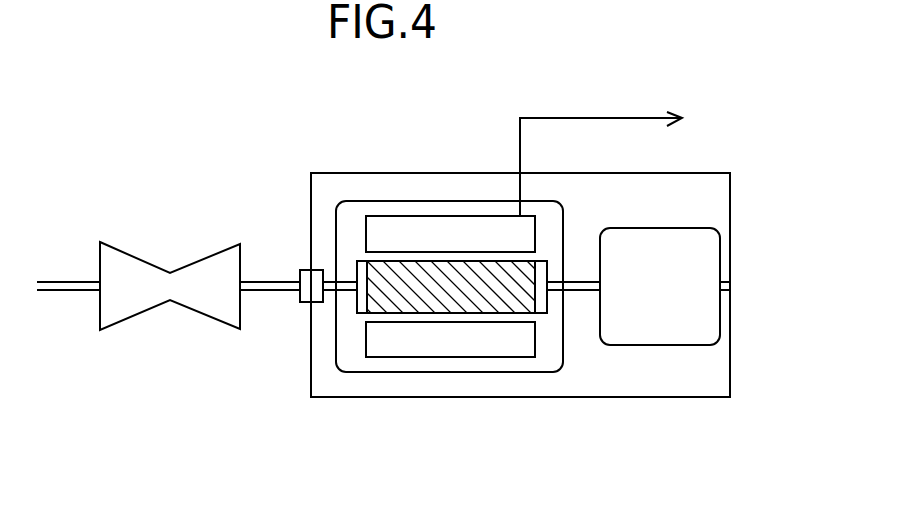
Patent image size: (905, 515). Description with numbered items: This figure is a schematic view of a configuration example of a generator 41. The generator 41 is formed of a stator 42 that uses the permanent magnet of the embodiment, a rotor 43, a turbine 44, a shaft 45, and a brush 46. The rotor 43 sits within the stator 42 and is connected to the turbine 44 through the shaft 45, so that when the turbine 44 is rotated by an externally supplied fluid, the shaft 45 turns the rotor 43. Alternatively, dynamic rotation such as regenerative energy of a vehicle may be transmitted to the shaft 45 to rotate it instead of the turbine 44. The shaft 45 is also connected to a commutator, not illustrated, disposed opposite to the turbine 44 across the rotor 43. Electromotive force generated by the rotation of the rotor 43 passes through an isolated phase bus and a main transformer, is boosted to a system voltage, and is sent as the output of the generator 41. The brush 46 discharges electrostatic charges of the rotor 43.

The generator 41 is at (355, 172).
The stator 42 is at (419, 347).
The rotor 43 is at (465, 307).
The turbine 44 is at (212, 255).
The shaft 45 is at (277, 292).
The brush 46 is at (657, 327).